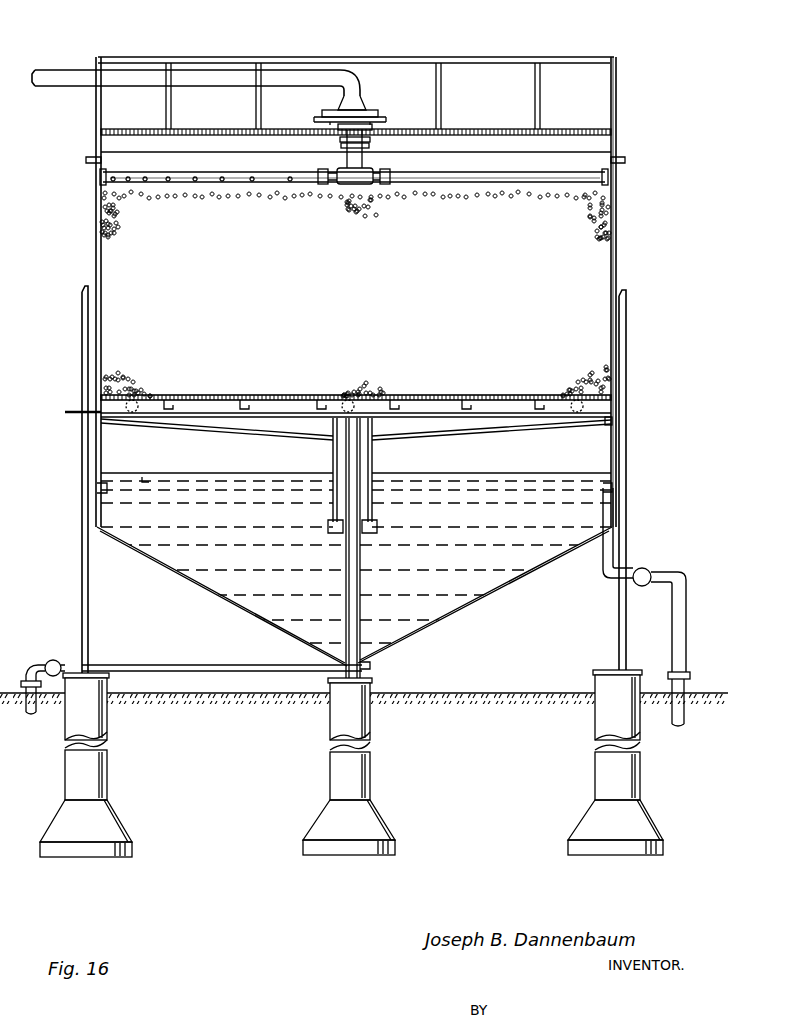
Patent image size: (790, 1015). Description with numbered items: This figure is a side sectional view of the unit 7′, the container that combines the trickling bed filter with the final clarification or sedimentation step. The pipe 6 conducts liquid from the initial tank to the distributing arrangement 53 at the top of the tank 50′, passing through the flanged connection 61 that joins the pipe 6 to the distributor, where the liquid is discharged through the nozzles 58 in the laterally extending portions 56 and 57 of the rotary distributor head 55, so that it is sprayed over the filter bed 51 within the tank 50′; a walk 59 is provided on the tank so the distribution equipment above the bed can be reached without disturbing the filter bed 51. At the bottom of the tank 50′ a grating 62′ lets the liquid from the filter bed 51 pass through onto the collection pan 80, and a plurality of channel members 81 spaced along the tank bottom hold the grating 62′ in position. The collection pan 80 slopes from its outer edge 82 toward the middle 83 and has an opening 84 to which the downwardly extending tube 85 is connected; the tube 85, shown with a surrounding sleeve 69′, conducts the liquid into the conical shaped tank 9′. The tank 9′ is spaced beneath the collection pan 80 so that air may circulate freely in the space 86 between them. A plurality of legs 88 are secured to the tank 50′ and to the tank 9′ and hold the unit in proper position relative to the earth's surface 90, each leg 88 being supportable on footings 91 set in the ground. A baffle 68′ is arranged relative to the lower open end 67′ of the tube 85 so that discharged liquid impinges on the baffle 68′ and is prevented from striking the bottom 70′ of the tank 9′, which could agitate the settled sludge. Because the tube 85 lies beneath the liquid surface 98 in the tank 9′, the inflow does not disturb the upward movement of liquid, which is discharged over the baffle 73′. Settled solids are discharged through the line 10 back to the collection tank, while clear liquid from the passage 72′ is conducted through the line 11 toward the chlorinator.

The fluid conducting line 6 is at (60, 69).
The walk 59 is at (598, 130).
The flanged riser connection 61 is at (345, 147).
The distributing arrangement 53 is at (370, 163).
The laterally extending portion of distributor rod 56 is at (135, 175).
The laterally extending portion of distributor rod 57 is at (590, 172).
The filter bed 51 is at (100, 210).
The tank 50′ is at (615, 207).
The nozzles 58 is at (252, 182).
The distributor rod 55 is at (362, 187).
The unit 7′ is at (615, 258).
The grating 62′ is at (442, 395).
The channel members 81 is at (528, 410).
The outer edge of collection pan 82 is at (612, 427).
The middle of collection pan 83 is at (333, 437).
The liquid surface 98 is at (145, 480).
The tube 85 is at (333, 460).
The opening 84 is at (372, 447).
The collection pan 80 is at (448, 433).
The space 86 is at (595, 449).
The passage 72′ is at (613, 487).
The baffle 73′ is at (97, 487).
The conical shaped tank 9′ is at (614, 510).
The legs 88 is at (88, 603).
The central sleeve 69′ is at (330, 527).
The line 11 is at (686, 617).
The lower open end of tube 67′ is at (377, 527).
The baffle 68′ is at (365, 540).
The line 10 is at (133, 662).
The bottom of tank 70′ is at (400, 625).
The earth's surface 90 is at (500, 692).
The footings 91 is at (107, 777).